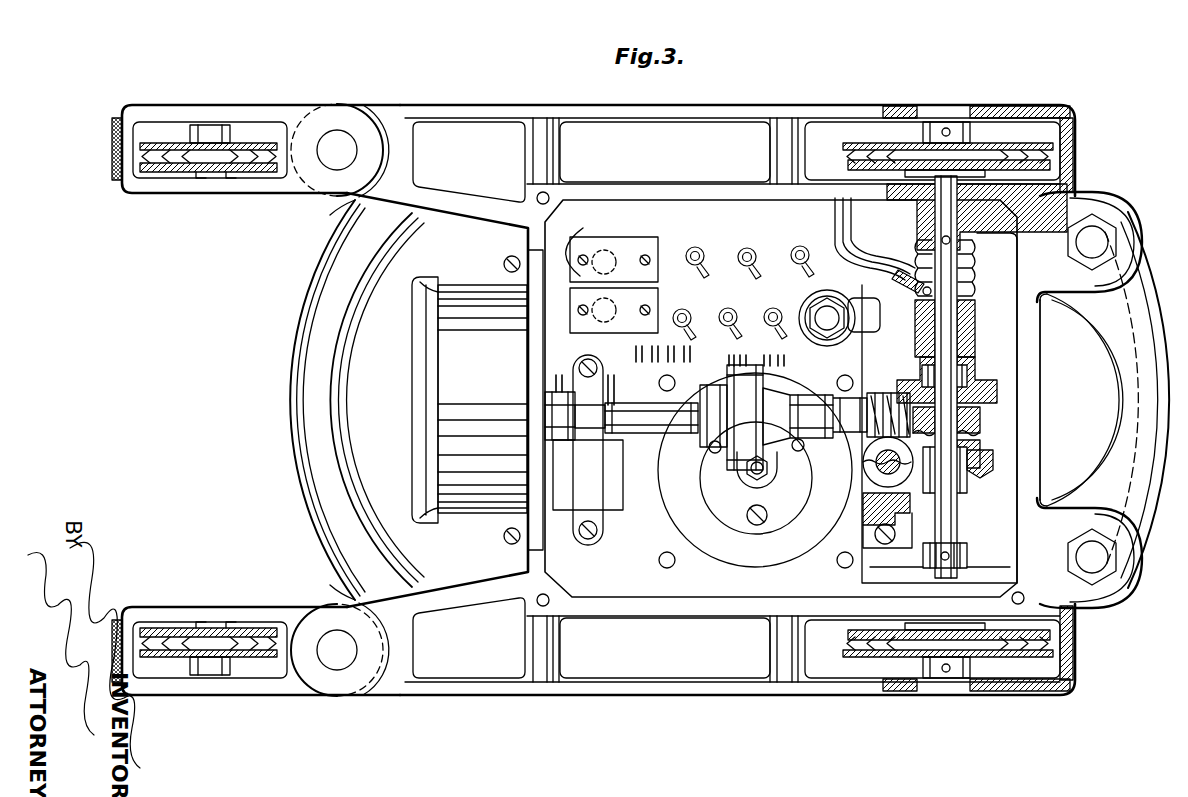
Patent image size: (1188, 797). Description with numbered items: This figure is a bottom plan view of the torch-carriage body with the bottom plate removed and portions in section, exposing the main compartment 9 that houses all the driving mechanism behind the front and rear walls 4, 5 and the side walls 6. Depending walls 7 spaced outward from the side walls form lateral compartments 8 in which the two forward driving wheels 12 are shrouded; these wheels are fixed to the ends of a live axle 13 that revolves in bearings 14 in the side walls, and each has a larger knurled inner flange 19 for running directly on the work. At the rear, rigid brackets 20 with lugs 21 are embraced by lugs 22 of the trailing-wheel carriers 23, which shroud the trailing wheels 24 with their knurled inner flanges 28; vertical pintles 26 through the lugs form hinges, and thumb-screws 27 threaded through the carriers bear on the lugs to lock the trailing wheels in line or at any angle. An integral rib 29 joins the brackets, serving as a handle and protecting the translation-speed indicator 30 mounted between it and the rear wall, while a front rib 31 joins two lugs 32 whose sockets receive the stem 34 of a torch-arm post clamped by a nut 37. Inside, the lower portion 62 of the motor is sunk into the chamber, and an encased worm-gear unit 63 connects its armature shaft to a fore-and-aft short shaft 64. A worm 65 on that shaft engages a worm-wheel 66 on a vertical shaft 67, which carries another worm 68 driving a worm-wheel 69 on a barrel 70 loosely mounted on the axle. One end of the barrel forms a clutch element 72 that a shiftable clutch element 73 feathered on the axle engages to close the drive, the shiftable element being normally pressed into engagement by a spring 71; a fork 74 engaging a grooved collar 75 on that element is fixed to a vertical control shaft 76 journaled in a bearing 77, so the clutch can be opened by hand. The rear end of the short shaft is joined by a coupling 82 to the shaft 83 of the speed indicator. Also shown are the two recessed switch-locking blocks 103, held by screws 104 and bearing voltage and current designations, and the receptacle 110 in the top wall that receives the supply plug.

The front wall 4 is at (150, 403).
The rear wall 5 is at (823, 100).
The side walls 6 is at (727, 190).
The depending walls 7 is at (706, 113).
The lateral compartments 8 is at (932, 400).
The main compartment 9 is at (604, 493).
The driving wheels 12 is at (1001, 138).
The live axle 13 is at (958, 524).
The bearings 14 is at (918, 214).
The inner flange 19 is at (1050, 166).
The rigid brackets 20 is at (466, 107).
The lugs 21 is at (372, 108).
The lugs 22 is at (335, 190).
The trailing-wheel carriers 23 is at (230, 194).
The trailing wheels 24 is at (165, 138).
The vertical pintles 26 is at (337, 140).
The thumb-screws 27 is at (113, 173).
The inner flanges 28 is at (154, 176).
The integral rib 29 is at (302, 443).
The translation-speed indicator 30 is at (469, 400).
The rib 31 is at (1118, 436).
The lugs 32 is at (1062, 288).
The stem 34 is at (1092, 399).
The nut 37 is at (1099, 216).
The lower portion of motor 62 is at (766, 562).
The worm-gear unit 63 is at (783, 412).
The short shaft 64 is at (702, 440).
The worm 65 is at (875, 393).
The worm-wheel 66 is at (868, 450).
The vertical shaft 67 is at (878, 471).
The worm 68 is at (866, 500).
The worm-wheel 69 is at (978, 472).
The barrel 70 is at (975, 414).
The spring 71 is at (975, 290).
The clutch element 72 is at (963, 413).
The shiftable clutch element 73 is at (997, 368).
The fork 74 is at (901, 286).
The grooved collar 75 is at (976, 332).
The vertical control shaft 76 is at (840, 323).
The bearing 77 is at (818, 345).
The coupling 82 is at (640, 434).
The shaft of speed indicator 83 is at (591, 430).
The recessed blocks 103 is at (650, 242).
The screws 104 is at (582, 248).
The receptacle 110 is at (890, 262).